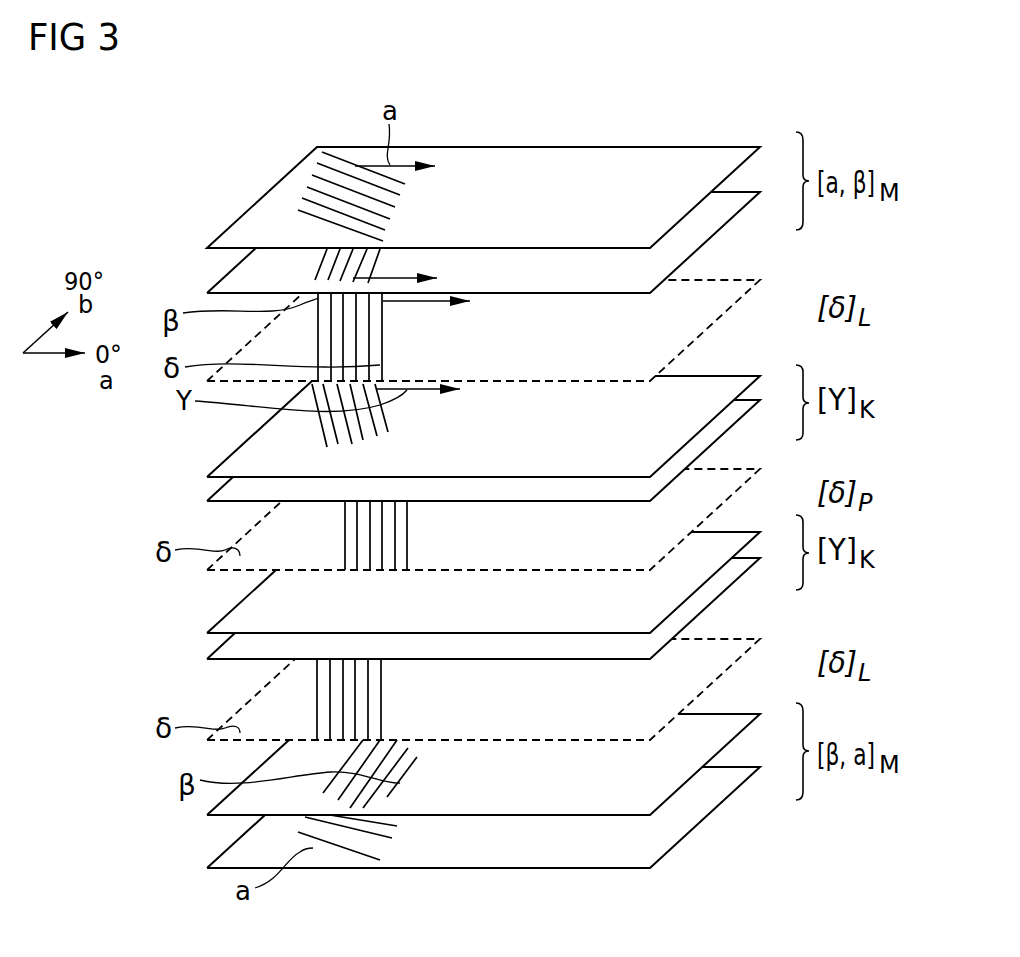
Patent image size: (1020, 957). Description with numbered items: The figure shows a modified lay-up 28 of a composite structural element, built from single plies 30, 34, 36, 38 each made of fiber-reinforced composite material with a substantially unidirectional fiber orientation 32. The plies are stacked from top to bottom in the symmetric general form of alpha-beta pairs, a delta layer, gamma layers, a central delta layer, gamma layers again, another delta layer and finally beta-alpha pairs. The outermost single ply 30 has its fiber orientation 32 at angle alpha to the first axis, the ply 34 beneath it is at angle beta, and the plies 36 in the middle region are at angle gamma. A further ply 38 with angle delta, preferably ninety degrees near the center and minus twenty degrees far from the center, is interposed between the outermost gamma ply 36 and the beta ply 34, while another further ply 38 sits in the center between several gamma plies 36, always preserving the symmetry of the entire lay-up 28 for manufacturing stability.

The lay-up 28 is at (250, 162).
The single ply 30 is at (720, 156).
The unidirectional fiber orientation 32 is at (320, 214).
The ply 34 is at (703, 225).
The ply 36 is at (722, 417).
The further ply 38 is at (725, 301).